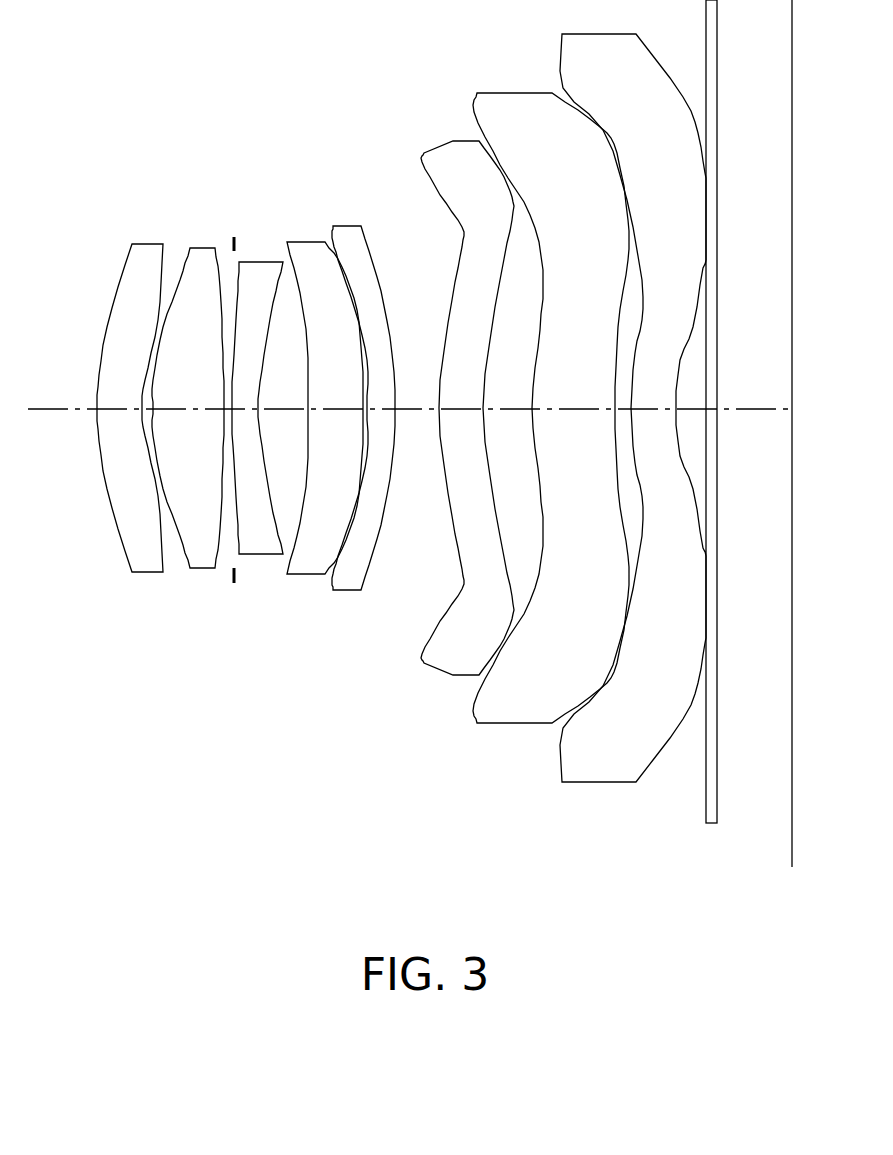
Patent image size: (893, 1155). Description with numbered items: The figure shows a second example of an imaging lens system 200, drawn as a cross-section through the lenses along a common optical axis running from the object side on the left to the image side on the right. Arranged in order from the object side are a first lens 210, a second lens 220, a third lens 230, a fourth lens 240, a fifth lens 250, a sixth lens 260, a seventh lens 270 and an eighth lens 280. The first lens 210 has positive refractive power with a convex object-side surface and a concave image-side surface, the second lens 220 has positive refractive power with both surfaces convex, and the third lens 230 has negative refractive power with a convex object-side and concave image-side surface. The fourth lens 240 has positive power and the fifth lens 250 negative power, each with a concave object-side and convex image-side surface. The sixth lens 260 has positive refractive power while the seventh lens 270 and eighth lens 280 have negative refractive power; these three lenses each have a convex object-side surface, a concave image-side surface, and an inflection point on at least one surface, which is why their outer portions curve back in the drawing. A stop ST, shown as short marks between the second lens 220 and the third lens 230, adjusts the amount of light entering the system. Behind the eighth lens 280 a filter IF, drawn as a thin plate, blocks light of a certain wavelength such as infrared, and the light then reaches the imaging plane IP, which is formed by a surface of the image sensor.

The imaging lens system 200 is at (313, 100).
The first lens 210 is at (148, 574).
The second lens 220 is at (202, 570).
The third lens 230 is at (262, 556).
The fourth lens 240 is at (308, 576).
The fifth lens 250 is at (347, 592).
The sixth lens 260 is at (440, 677).
The seventh lens 270 is at (515, 725).
The eighth lens 280 is at (600, 784).
The stop ST is at (237, 243).
The filter IF is at (712, 825).
The imaging plane IP is at (792, 840).